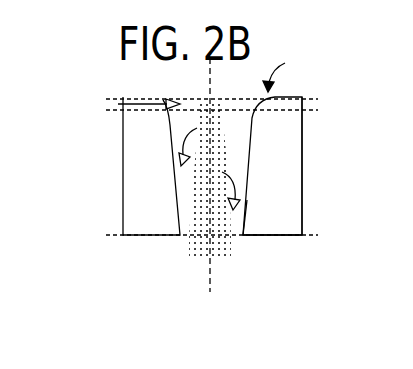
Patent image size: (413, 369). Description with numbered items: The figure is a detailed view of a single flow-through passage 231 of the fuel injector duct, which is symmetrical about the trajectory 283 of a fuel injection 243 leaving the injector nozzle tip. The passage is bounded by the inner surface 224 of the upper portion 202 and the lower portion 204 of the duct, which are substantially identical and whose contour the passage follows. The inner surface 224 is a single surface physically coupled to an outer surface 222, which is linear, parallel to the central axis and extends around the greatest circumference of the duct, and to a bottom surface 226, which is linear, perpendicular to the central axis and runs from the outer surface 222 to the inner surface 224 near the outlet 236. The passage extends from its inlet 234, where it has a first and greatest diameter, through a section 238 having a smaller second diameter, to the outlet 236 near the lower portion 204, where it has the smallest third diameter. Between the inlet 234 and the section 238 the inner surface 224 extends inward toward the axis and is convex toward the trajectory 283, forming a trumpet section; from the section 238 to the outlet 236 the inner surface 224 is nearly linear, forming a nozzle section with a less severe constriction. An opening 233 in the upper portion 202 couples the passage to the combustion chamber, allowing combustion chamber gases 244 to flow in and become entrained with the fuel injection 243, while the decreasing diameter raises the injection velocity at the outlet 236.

The upper portion 202 is at (165, 194).
The lower portion 204 is at (290, 194).
The outer surface 222 is at (302, 178).
The inner surface 224 is at (242, 224).
The bottom surface 226 is at (282, 237).
The flow-through passage 231 is at (291, 71).
The opening 233 is at (132, 98).
The inlet 234 is at (110, 99).
The outlet 236 is at (110, 235).
The section 238 is at (110, 110).
The fuel injection 243 is at (188, 245).
The combustion chamber gases 244 is at (229, 171).
The trajectory 283 is at (210, 283).